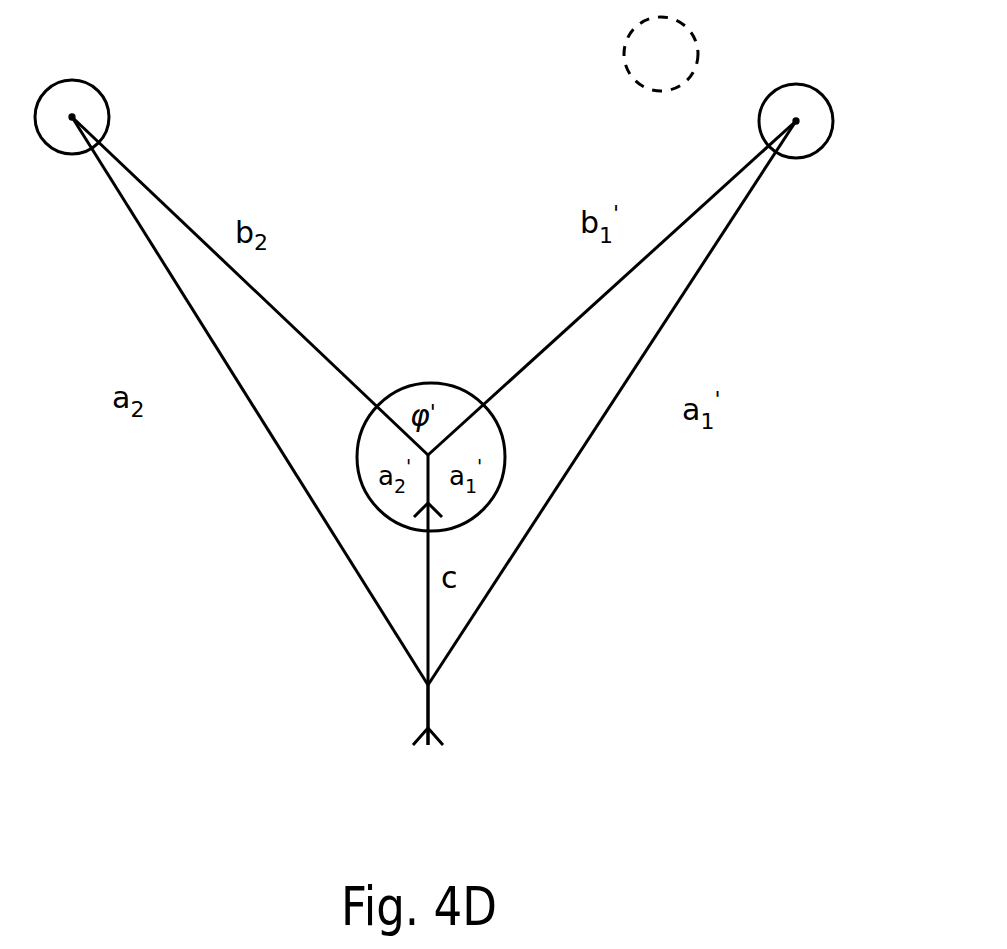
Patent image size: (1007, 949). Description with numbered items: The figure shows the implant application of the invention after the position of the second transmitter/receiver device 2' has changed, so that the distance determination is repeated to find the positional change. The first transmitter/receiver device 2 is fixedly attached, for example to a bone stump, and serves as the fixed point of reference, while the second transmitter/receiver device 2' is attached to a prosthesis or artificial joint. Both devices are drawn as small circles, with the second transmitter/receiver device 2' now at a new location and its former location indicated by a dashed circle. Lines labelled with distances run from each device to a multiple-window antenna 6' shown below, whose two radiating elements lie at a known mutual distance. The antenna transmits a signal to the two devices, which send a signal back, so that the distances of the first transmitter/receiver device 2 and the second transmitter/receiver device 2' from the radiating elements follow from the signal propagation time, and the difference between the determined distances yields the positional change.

The first transmitter/receiver device 2 is at (96, 93).
The second transmitter/receiver device 2' is at (825, 103).
The receiver position 6' is at (474, 707).